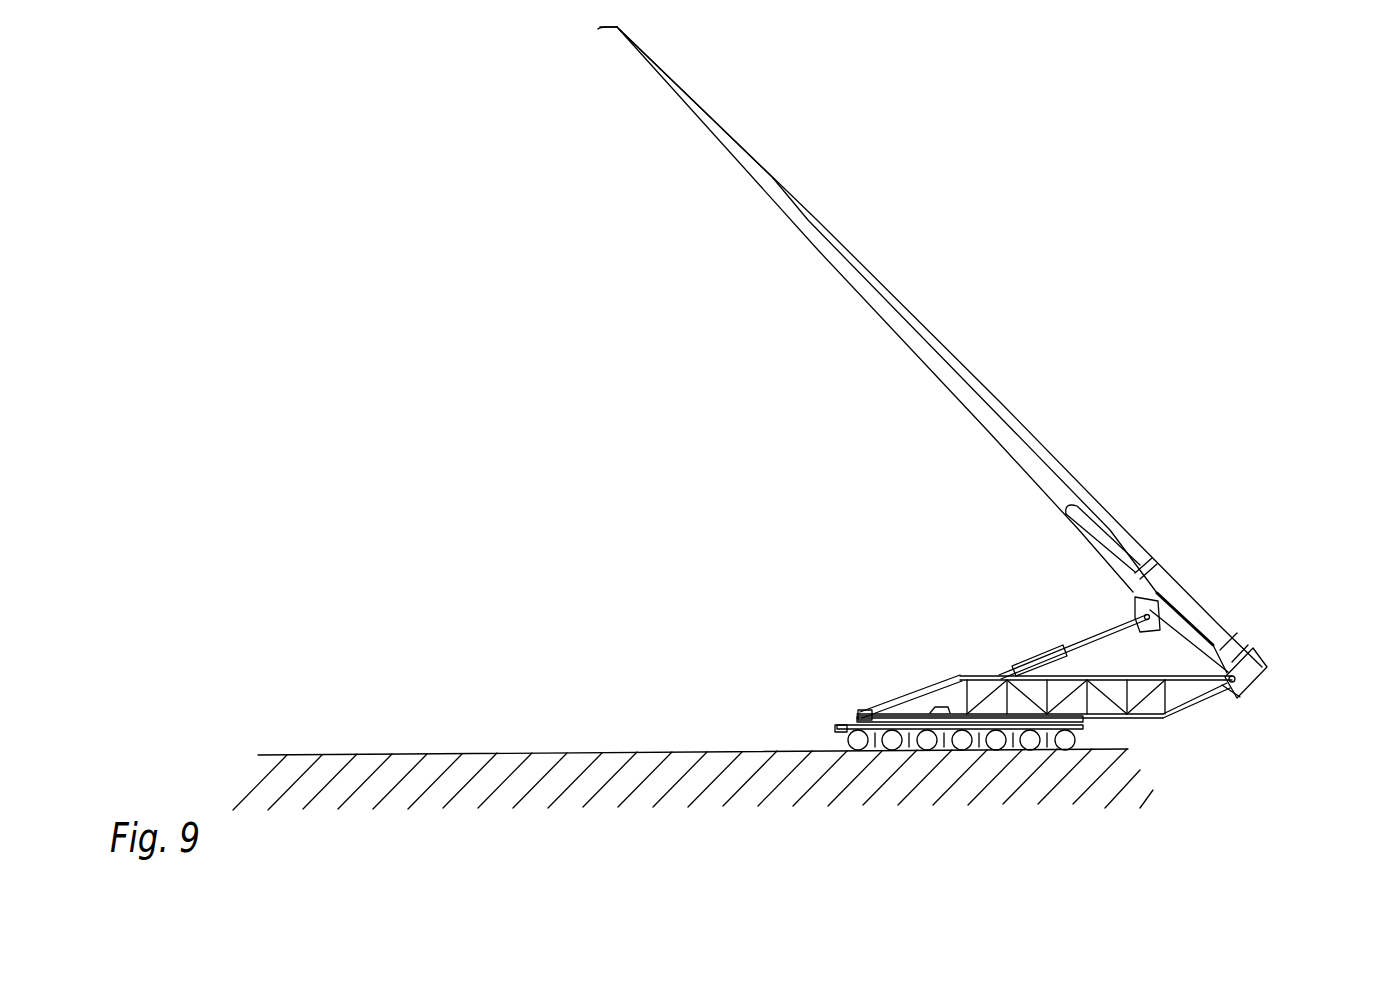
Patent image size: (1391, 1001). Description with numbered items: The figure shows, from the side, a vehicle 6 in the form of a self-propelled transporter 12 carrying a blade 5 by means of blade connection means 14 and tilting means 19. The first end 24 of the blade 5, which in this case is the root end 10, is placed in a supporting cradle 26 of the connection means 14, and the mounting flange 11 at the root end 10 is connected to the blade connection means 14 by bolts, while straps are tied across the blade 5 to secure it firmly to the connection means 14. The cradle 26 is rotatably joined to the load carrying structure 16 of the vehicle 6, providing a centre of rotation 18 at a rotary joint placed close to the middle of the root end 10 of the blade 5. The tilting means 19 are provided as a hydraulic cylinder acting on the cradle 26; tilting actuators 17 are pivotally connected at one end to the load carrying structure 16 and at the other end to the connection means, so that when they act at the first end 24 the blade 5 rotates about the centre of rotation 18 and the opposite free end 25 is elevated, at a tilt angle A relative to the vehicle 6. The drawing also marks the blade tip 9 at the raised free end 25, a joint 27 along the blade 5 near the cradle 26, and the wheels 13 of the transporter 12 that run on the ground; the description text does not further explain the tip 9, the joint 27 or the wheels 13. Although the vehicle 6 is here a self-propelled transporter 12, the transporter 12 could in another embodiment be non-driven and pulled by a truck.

The blade 5 is at (1039, 472).
The vehicle 6 is at (830, 502).
The mast tip 9 is at (598, 29).
The root end 10 is at (1257, 668).
The mounting flange 11 is at (1262, 677).
The self-propelled transporter 12 is at (1043, 730).
The wheel 13 is at (933, 743).
The blade connection means 14 is at (1130, 621).
The load carrying structure 16 is at (963, 672).
The tilting actuator 17 is at (1047, 660).
The centre of rotation 18 is at (1240, 697).
The tilting means 19 is at (1108, 610).
The first end 24 is at (1230, 630).
The free end 25 is at (628, 45).
The supporting cradle 26 is at (1092, 530).
The joint 27 is at (1150, 558).
The angle A is at (1195, 631).